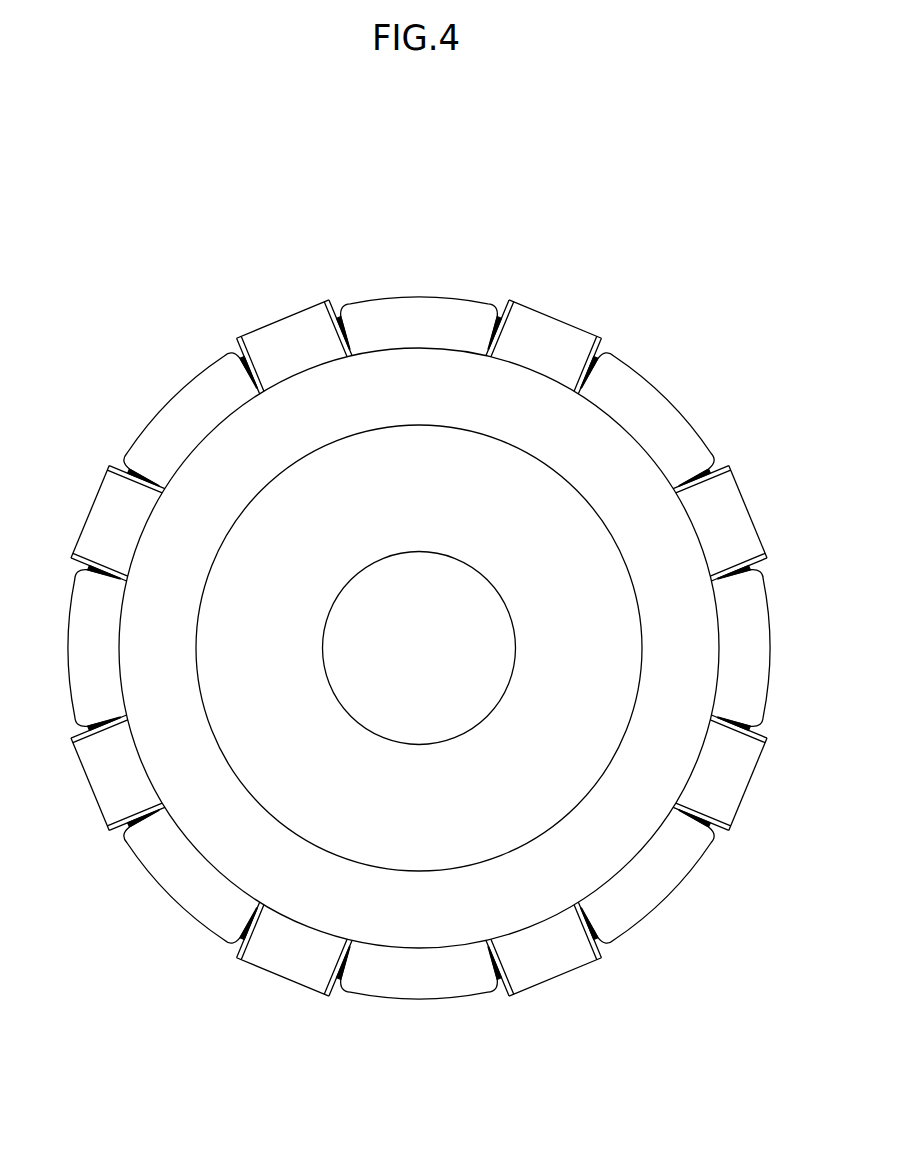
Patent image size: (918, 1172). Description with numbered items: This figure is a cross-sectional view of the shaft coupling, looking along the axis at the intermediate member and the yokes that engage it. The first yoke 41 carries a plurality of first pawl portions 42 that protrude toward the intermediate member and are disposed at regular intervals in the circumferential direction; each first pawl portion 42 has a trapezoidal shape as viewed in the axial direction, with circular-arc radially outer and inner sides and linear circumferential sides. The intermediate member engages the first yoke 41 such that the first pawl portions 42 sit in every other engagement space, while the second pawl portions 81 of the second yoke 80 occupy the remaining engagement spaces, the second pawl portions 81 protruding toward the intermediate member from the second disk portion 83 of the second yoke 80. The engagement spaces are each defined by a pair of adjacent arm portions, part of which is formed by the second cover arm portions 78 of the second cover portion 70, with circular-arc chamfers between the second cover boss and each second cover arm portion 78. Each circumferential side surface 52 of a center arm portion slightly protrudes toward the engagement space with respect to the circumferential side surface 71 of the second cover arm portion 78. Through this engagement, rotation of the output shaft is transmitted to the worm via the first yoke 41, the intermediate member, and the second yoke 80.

The first yoke 41 is at (133, 437).
The first pawl portion 42 is at (177, 433).
The circumferential side surface of the center arm portion 52 is at (238, 353).
The second cover portion 70 is at (535, 300).
The circumferential side surface of the second cover arm portion 71 is at (240, 384).
The second cover arm portion 78 is at (288, 365).
The second yoke 80 is at (396, 294).
The second pawl portion 81 is at (433, 330).
The second disk portion 83 is at (272, 432).